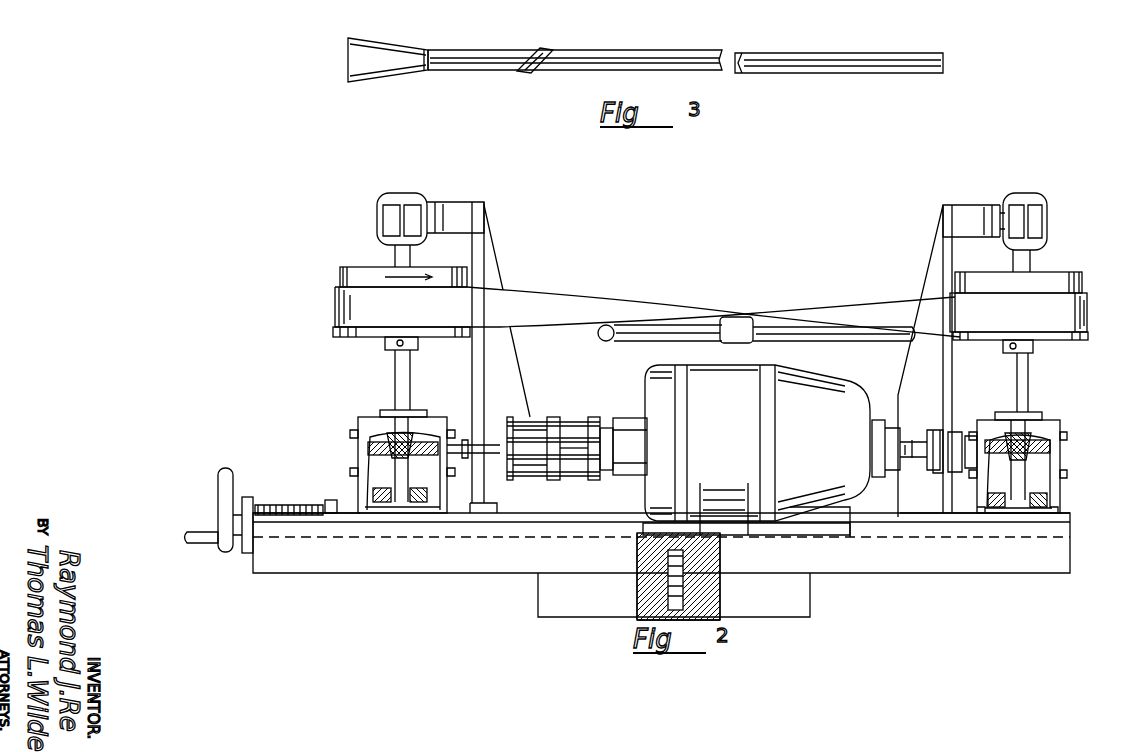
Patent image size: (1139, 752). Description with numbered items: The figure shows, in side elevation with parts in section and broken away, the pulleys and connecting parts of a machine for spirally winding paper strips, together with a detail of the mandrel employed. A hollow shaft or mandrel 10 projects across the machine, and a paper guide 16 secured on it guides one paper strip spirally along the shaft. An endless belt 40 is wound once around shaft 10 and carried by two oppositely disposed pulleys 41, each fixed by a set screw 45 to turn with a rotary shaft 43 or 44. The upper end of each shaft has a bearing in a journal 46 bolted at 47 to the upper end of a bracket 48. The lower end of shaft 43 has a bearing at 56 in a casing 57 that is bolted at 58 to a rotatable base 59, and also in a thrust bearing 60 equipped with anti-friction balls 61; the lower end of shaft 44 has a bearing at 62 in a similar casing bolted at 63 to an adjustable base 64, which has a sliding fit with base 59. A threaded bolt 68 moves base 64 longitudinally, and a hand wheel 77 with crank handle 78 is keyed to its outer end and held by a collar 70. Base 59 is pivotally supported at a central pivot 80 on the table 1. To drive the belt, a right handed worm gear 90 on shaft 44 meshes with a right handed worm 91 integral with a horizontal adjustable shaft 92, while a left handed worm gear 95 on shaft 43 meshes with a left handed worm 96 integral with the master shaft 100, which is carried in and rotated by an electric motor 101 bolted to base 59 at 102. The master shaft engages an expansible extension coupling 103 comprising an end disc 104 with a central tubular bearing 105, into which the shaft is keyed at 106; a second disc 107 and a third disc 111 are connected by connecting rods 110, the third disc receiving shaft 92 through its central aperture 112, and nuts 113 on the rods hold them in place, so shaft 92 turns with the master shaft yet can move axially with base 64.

In FIG. 2, the table 1 is at (810, 597).
In FIG. 3, the hollow shaft or mandrel 10 is at (630, 53).
In FIG. 3, the paper guide 16 is at (531, 48).
In FIG. 2, the endless belt 40 is at (842, 302).
In FIG. 2, the pulley 41 is at (360, 270).
In FIG. 2, the rotary shaft 43 is at (1014, 375).
In FIG. 2, the rotary shaft 44 is at (412, 372).
In FIG. 2, the set screw 45 is at (385, 344).
In FIG. 2, the journal 46 is at (1040, 213).
In FIG. 2, the bolt 47 is at (1043, 226).
In FIG. 2, the bracket 48 is at (492, 268).
In FIG. 2, the bearing 56 is at (999, 413).
In FIG. 2, the casing 57 is at (365, 416).
In FIG. 2, the bolt 58 is at (1050, 501).
In FIG. 2, the rotatable base 59 is at (916, 575).
In FIG. 2, the thrust bearing 60 is at (360, 500).
In FIG. 2, the anti-friction balls 61 is at (372, 490).
In FIG. 2, the bearing 62 is at (392, 410).
In FIG. 2, the bolt 63 is at (437, 540).
In FIG. 2, the adjustable base 64 is at (333, 516).
In FIG. 2, the threaded bolt 68 is at (288, 516).
In FIG. 2, the collar 70 is at (228, 554).
In FIG. 2, the hand wheel 77 is at (242, 553).
In FIG. 2, the crank handle 78 is at (190, 541).
In FIG. 2, the central pivot 80 is at (650, 565).
In FIG. 2, the right handed worm gear 90 is at (392, 458).
In FIG. 2, the right handed worm 91 is at (358, 434).
In FIG. 2, the horizontal adjustable shaft 92 is at (489, 445).
In FIG. 2, the left handed worm gear 95 is at (1065, 472).
In FIG. 2, the left handed worm 96 is at (1058, 431).
In FIG. 2, the master shaft 100 is at (908, 522).
In FIG. 2, the electric motor 101 is at (796, 378).
In FIG. 2, the bolt 102 is at (815, 525).
In FIG. 2, the expansible extension coupling 103 is at (546, 418).
In FIG. 2, the end disc 104 is at (594, 418).
In FIG. 2, the central tubular bearing 105 is at (606, 482).
In FIG. 2, the key 106 is at (615, 418).
In FIG. 2, the second disc 107 is at (553, 482).
In FIG. 2, the connecting rods 110 is at (586, 416).
In FIG. 2, the third disc 111 is at (520, 478).
In FIG. 2, the central aperture 112 is at (504, 458).
In FIG. 2, the nuts 113 is at (528, 380).